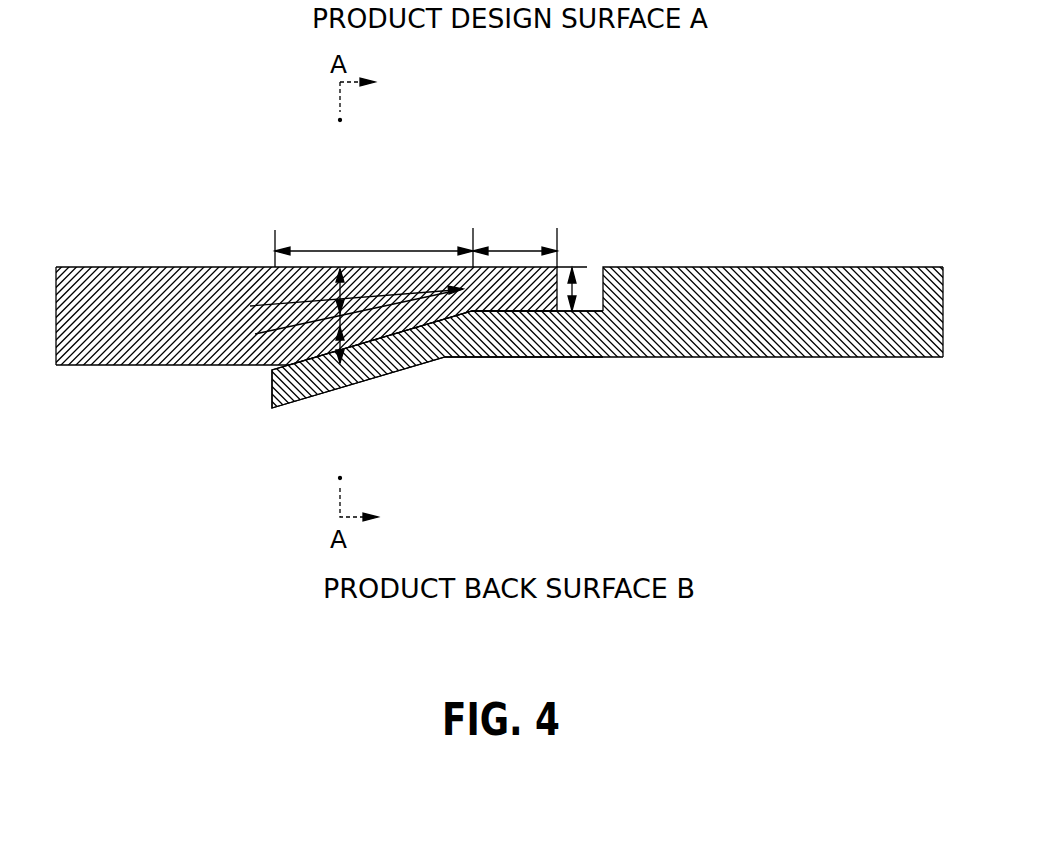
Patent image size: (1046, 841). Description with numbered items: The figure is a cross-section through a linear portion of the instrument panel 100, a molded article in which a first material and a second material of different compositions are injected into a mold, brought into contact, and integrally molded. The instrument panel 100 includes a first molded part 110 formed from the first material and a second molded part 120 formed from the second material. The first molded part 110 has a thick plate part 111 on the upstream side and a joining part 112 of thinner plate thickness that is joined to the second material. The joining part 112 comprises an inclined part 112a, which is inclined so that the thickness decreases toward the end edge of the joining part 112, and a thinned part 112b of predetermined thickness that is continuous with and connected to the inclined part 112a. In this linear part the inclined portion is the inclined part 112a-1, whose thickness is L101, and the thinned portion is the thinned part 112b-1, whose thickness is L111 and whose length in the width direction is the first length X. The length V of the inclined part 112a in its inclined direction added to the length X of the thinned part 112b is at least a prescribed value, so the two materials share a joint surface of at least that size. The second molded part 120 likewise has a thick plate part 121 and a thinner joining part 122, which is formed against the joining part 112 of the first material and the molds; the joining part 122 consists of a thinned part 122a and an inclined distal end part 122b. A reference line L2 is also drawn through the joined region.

The instrument panel 100 is at (724, 204).
The first molded part 110 is at (205, 268).
The thick plate part 111 is at (127, 270).
The joining part 112 is at (550, 162).
The inclined part 112a is at (357, 290).
The inclined part of the linear part 112a-1 is at (359, 259).
The thinned part 112b is at (515, 268).
The thinned part of the linear part 112b-1 is at (497, 248).
The second molded part 120 is at (800, 268).
The thick plate part 121 is at (773, 358).
The joining part 122 is at (575, 438).
The thinned part 122a is at (540, 345).
The inclined distal end part 122b is at (422, 362).
The thickness of the inclined part L101 is at (305, 250).
The perpendicular reference line L2 is at (340, 363).
The thickness of the thinned part L111 is at (573, 291).
The length of the inclined part V is at (306, 332).
The first length of the thinned part X is at (533, 250).